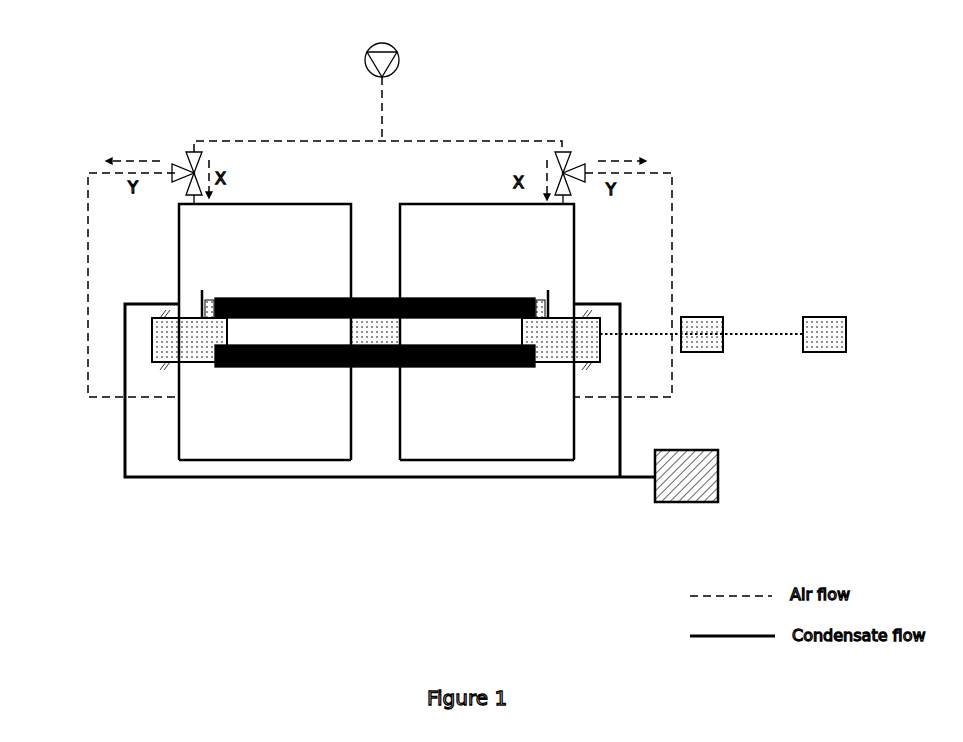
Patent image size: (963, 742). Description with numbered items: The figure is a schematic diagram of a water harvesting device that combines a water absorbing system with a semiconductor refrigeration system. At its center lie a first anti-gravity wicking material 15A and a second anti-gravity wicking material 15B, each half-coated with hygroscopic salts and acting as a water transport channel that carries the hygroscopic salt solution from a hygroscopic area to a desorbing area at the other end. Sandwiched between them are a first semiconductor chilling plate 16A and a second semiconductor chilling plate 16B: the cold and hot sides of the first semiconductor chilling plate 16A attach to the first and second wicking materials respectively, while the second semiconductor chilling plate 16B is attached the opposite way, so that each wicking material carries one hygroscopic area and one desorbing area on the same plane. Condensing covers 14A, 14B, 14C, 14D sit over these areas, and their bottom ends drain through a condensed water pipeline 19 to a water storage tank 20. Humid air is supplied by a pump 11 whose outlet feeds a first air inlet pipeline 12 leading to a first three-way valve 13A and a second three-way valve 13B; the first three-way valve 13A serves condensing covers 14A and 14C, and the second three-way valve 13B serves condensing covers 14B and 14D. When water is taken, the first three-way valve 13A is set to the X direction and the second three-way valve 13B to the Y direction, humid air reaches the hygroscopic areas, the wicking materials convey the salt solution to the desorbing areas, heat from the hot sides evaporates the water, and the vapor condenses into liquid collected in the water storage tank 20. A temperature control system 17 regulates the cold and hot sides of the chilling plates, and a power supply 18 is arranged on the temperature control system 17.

The pump 11 is at (398, 52).
The first air inlet pipeline 12 is at (532, 140).
The first three-way valve 13A is at (190, 172).
The second three-way valve 13B is at (568, 170).
The condensing cover 14A is at (179, 265).
The condensing cover 14B is at (575, 238).
The condensing cover 14C is at (218, 460).
The condensing cover 14D is at (493, 460).
The first anti-gravity wicking material 15A is at (510, 297).
The second anti-gravity wicking material 15B is at (503, 367).
The first semiconductor chilling plate 16A is at (272, 330).
The second semiconductor chilling plate 16B is at (503, 333).
The temperature control system 17 is at (705, 352).
The power supply 18 is at (847, 350).
The condensed water pipeline 19 is at (383, 477).
The water storage tank 20 is at (700, 502).